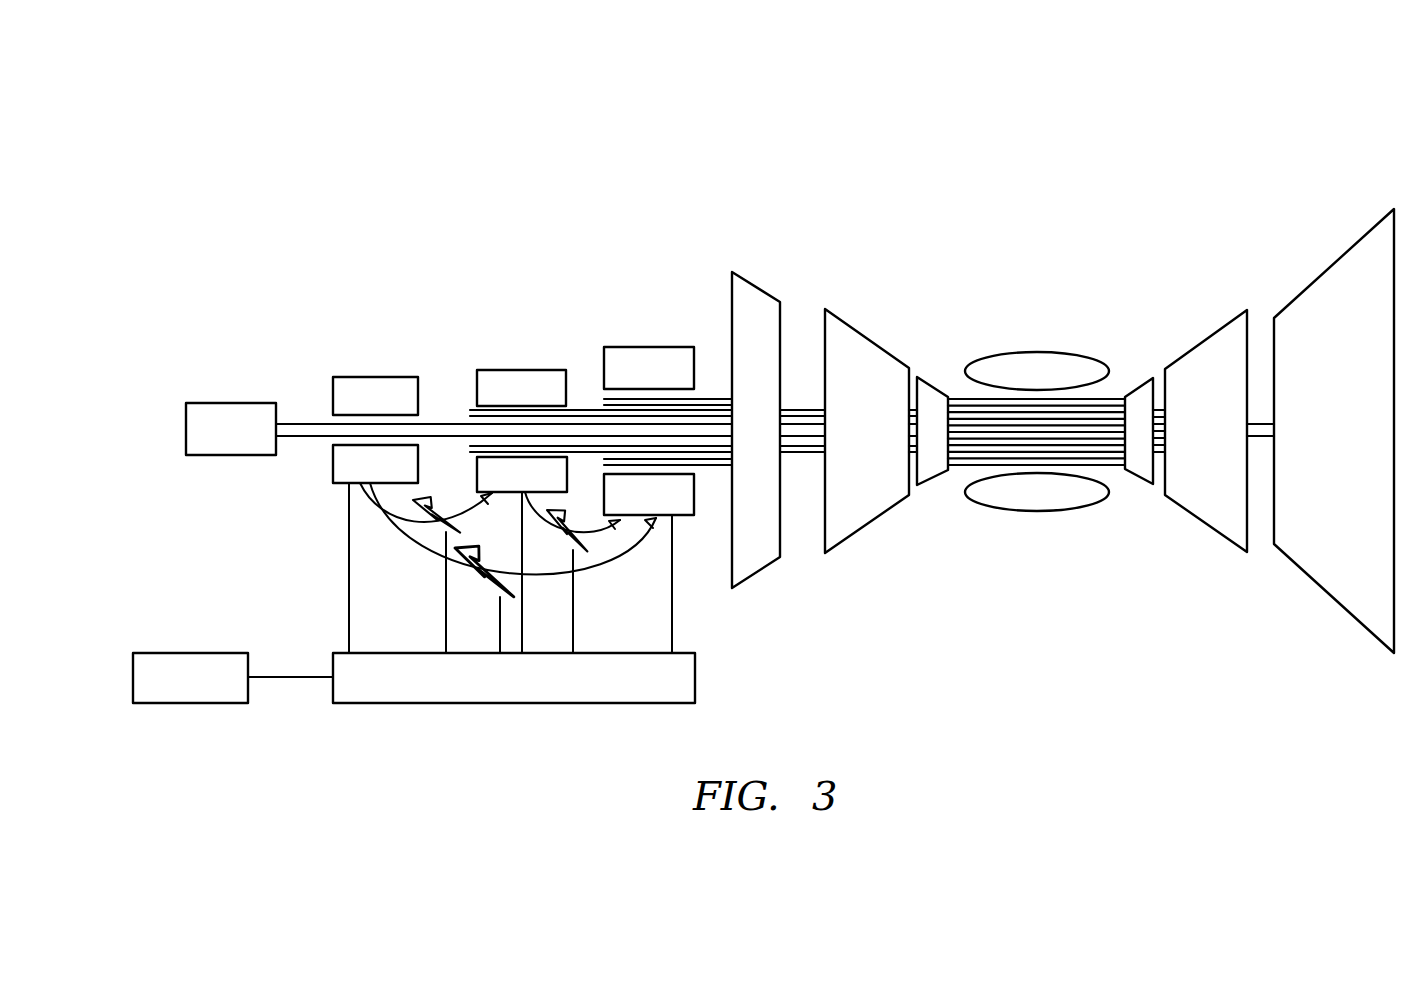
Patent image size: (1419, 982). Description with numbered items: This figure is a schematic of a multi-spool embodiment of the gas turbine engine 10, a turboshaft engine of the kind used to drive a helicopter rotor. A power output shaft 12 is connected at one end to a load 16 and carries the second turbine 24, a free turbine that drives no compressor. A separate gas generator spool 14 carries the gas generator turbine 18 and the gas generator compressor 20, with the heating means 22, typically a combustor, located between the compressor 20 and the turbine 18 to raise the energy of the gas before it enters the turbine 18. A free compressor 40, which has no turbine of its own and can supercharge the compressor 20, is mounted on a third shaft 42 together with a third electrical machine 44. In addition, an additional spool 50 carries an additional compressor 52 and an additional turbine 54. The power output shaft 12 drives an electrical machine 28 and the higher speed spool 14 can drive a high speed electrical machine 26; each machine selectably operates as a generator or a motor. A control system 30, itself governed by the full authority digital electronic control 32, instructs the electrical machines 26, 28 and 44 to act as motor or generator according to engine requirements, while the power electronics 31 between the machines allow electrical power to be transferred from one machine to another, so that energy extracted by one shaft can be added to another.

The gas turbine engine 10 is at (872, 119).
The power output shaft 12 is at (297, 422).
The gas generator spool 14 is at (1115, 399).
The load 16 is at (232, 403).
The gas generator turbine 18 is at (1146, 383).
The gas generator compressor 20 is at (936, 390).
The heating means 22 is at (1038, 352).
The second turbine 24 is at (1316, 280).
The high speed electrical machine 26 is at (521, 370).
The electrical machine 28 is at (383, 377).
The control system 30 is at (697, 677).
The power electronics 31 is at (435, 528).
The full authority digital electronic control (FADEC) 32 is at (190, 653).
The free compressor 40 is at (766, 294).
The third shaft 42 is at (711, 467).
The third electrical machine 44 is at (640, 347).
The additional spool 50 is at (586, 409).
The additional compressor 52 is at (874, 343).
The additional turbine 54 is at (1221, 329).